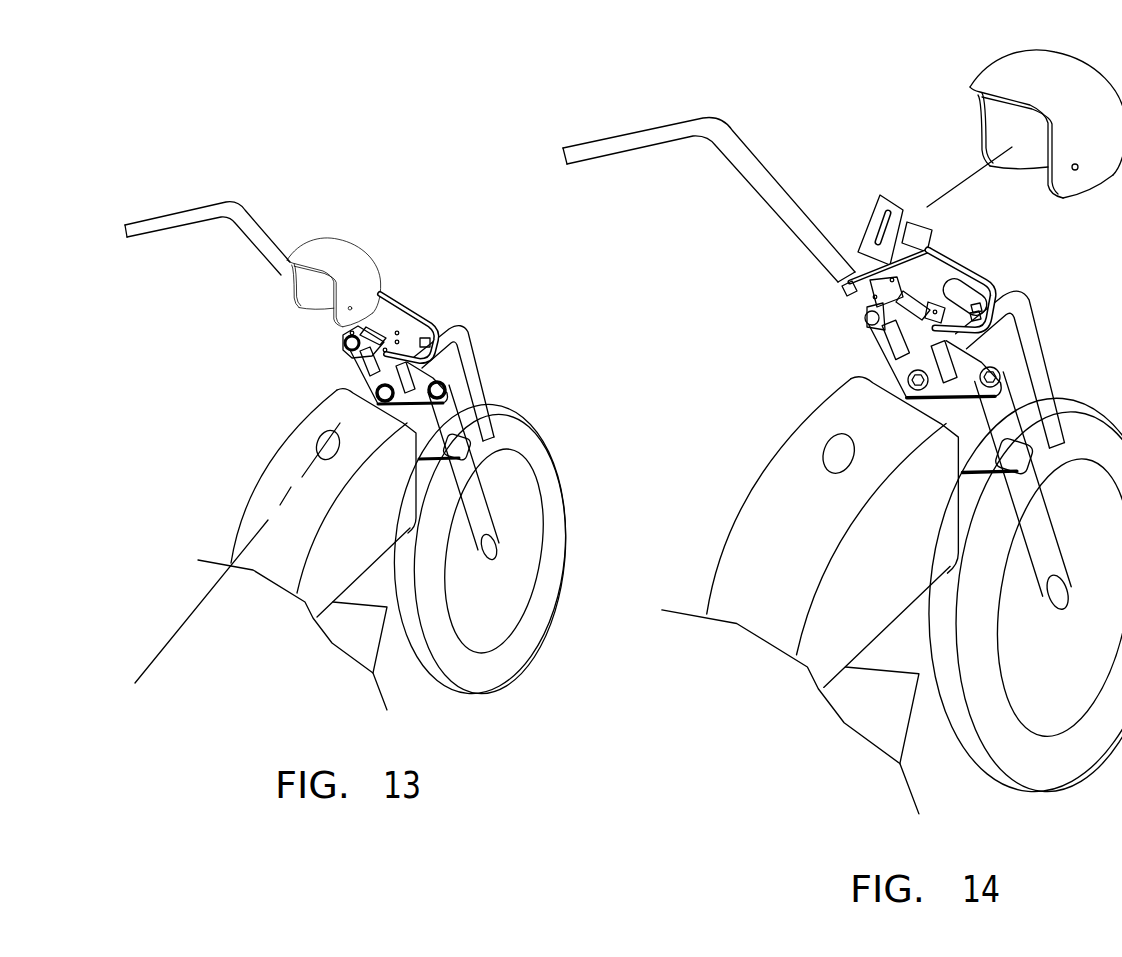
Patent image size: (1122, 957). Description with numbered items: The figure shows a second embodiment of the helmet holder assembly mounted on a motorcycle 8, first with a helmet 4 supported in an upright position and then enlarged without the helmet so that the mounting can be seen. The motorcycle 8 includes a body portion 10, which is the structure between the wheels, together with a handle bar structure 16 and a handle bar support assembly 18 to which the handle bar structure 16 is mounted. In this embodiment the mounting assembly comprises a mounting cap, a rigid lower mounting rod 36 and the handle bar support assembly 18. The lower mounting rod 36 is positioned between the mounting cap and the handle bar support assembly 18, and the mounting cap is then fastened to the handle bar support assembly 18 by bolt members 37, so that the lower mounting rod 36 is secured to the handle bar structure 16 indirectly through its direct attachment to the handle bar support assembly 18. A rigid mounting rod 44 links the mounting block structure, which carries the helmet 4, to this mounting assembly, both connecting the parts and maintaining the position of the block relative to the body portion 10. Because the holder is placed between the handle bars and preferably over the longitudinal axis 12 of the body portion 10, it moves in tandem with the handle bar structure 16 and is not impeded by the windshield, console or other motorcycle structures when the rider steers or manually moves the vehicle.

In FIG. 13, the helmet 4 is at (265, 275).
In FIG. 13, the motorcycle 8 is at (253, 491).
In FIG. 13, the body portion 10 is at (260, 500).
In FIG. 13, the longitudinal axis 12 is at (432, 317).
In FIG. 13, the handle bar structure 16 is at (250, 220).
In FIG. 13, the handle bar support assembly 18 is at (345, 347).
In FIG. 14, the handle bar support assembly 18 is at (865, 318).
In FIG. 14, the lower mounting rod 36 is at (990, 283).
In FIG. 14, the bolt members 37 is at (903, 340).
In FIG. 13, the mounting rod 44 is at (447, 315).